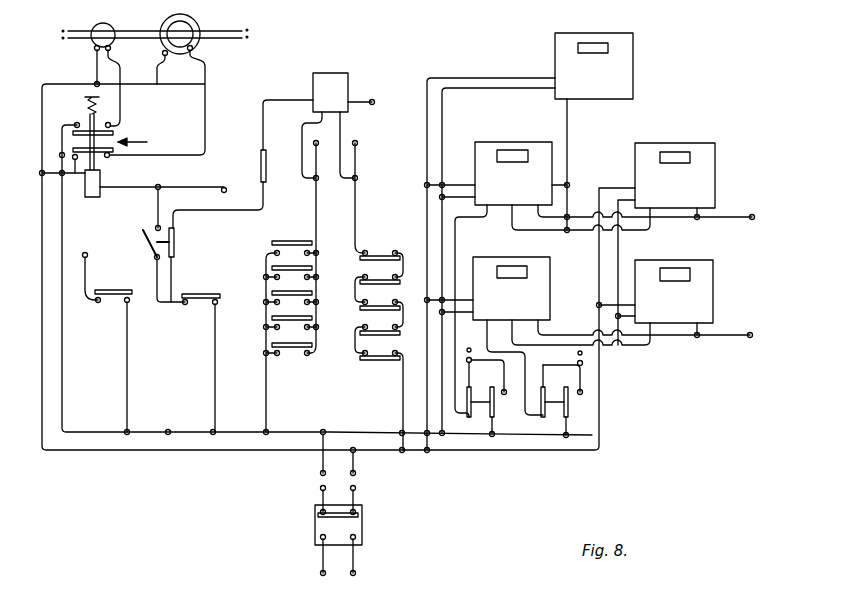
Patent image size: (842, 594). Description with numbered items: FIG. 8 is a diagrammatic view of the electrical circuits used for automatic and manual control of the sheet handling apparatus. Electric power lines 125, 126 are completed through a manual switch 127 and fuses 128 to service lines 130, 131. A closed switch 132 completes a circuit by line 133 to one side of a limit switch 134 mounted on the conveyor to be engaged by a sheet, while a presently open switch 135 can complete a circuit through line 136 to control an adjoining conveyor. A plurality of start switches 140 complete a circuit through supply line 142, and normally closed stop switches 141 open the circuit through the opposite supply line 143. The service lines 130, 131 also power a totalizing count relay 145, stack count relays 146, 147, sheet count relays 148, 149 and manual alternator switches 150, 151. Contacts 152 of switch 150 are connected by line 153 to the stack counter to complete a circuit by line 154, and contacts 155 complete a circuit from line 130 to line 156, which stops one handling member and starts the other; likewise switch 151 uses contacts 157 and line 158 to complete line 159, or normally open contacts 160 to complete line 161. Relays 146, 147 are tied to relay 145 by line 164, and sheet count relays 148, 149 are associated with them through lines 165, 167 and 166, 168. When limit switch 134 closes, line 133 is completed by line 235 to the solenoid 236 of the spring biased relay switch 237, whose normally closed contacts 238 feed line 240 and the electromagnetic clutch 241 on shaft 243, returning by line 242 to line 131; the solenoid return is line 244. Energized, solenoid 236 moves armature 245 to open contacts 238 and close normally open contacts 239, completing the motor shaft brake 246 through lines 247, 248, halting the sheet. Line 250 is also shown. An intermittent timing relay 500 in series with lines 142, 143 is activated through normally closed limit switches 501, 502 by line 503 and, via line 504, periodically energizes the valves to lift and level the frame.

The electric power line 125 is at (318, 565).
The electric power line 126 is at (357, 563).
The manual switch 127 is at (314, 527).
The fuses 128 is at (318, 481).
The service line 130 is at (64, 229).
The service line 131 is at (41, 229).
The manual switch 132 is at (204, 294).
The line 133 is at (156, 304).
The limit switch 134 is at (143, 240).
The switch 135 is at (112, 300).
The line 136 is at (88, 268).
The start switches 140 is at (289, 358).
The stop switches 141 is at (372, 368).
The supply line 142 is at (312, 216).
The supply line 143 is at (357, 219).
The totalizing count relay 145 is at (529, 241).
The stack count relay 146 is at (497, 173).
The stack count relay 147 is at (488, 288).
The sheet count relay 148 is at (666, 244).
The sheet count relay 149 is at (674, 291).
The manual alternator switch 150 is at (496, 411).
The manual alternator switch 151 is at (571, 411).
The contacts 152 is at (470, 412).
The line 153 is at (458, 246).
The line 154 is at (471, 348).
The contacts 155 is at (496, 405).
The line 156 is at (504, 373).
The contacts 157 is at (548, 401).
The line 158 is at (493, 352).
The line 159 is at (577, 352).
The contacts 160 is at (570, 405).
The line 161 is at (579, 372).
The line 164 is at (570, 151).
The line 165 is at (722, 220).
The line 166 is at (720, 337).
The line 167 is at (633, 231).
The line 168 is at (631, 347).
The line 235 is at (157, 222).
The solenoid 236 is at (100, 194).
The spring biased relay switch 237 is at (149, 142).
The normally closed contacts 238 is at (110, 157).
The normally open contacts 239 is at (112, 127).
The line 240 is at (207, 133).
The electromagnetic clutch 241 is at (198, 27).
The line 242 is at (160, 77).
The shaft 243 is at (239, 34).
The line 244 is at (72, 180).
The armature 245 is at (85, 113).
The motor shaft brake 246 is at (113, 26).
The line 247 is at (121, 103).
The line 248 is at (91, 63).
The conductor 250 is at (194, 187).
The timing relay 500 is at (330, 92).
The limit switch 501 is at (176, 241).
The limit switch 502 is at (267, 166).
The line 503 is at (238, 210).
The line 504 is at (366, 100).